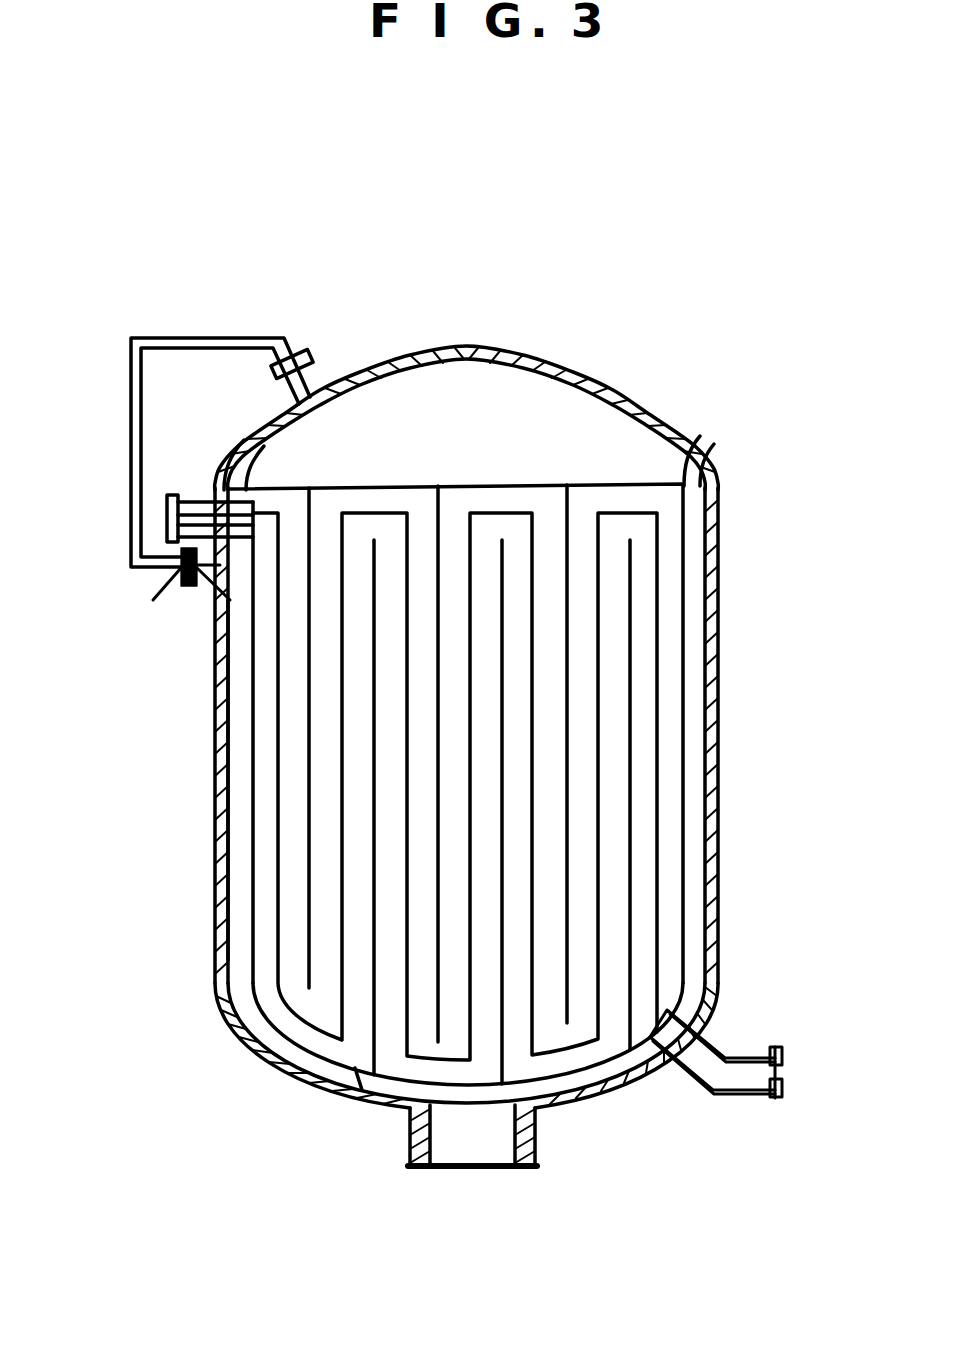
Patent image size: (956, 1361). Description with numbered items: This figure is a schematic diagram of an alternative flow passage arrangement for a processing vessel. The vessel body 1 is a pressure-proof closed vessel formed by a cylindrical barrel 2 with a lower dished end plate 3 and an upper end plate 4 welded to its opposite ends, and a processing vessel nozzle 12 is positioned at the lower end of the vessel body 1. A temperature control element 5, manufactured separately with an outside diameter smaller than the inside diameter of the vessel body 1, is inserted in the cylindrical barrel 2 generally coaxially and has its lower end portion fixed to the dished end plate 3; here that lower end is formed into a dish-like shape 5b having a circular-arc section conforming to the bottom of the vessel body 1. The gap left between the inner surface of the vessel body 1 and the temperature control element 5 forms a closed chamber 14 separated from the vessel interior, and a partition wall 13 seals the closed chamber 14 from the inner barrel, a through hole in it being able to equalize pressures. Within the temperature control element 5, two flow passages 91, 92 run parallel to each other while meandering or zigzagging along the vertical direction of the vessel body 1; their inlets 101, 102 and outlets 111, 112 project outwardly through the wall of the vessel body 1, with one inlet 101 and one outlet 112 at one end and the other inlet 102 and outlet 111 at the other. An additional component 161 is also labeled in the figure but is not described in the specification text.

The vessel body 1 is at (732, 725).
The cylindrical barrel 2 is at (721, 853).
The lower dished end plate 3 is at (297, 1080).
The end plate 4 is at (608, 374).
The temperature control element 5 is at (690, 613).
The dish-like shape 5b is at (358, 1076).
The processing vessel nozzle 12 is at (521, 1167).
The partition wall 13 is at (689, 434).
The closed chamber 14 is at (250, 895).
The flow passage 91 is at (295, 705).
The flow passage 92 is at (265, 783).
The inlet 101 is at (197, 493).
The inlet 102 is at (735, 1092).
The outlet 111 is at (745, 1052).
The outlet 112 is at (180, 552).
The bypass pipe 161 is at (222, 337).